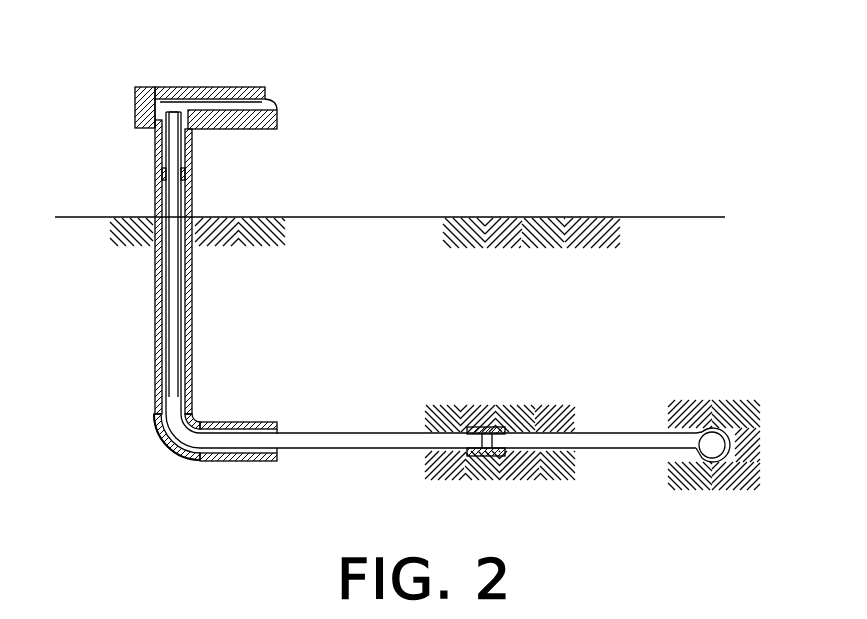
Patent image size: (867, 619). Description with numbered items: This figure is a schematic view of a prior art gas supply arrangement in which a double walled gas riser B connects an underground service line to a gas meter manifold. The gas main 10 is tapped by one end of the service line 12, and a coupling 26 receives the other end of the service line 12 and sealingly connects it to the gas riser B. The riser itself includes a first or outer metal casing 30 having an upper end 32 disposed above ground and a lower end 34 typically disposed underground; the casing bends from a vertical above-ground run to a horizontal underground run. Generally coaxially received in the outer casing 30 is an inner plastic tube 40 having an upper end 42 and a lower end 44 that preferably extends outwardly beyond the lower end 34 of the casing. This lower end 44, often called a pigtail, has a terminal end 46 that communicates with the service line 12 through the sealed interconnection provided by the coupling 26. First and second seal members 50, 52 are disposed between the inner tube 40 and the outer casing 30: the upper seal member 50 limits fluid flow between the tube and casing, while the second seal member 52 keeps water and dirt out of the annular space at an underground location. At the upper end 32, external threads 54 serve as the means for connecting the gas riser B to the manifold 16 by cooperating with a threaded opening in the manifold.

The gas main 10 is at (705, 408).
The service line 12 is at (608, 462).
The manifold 16 is at (246, 80).
The coupling 26 is at (500, 428).
The outer metal casing 30 is at (168, 321).
The upper end of the casing 32 is at (195, 148).
The lower end of the casing 34 is at (212, 463).
The inner plastic tube 40 is at (192, 329).
The upper end of the plastic tube 42 is at (175, 117).
The lower end of the plastic tube 44 is at (353, 443).
The terminal end 46 is at (478, 428).
The first seal member 50 is at (190, 176).
The second seal member 52 is at (252, 421).
The external threads 54 is at (145, 120).
The gas riser B is at (134, 409).